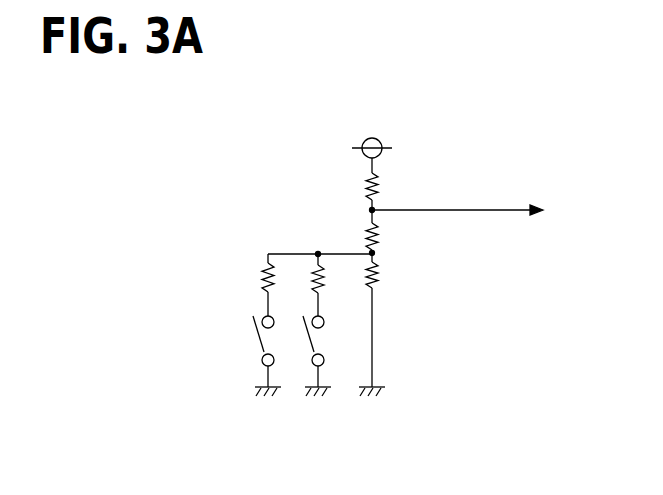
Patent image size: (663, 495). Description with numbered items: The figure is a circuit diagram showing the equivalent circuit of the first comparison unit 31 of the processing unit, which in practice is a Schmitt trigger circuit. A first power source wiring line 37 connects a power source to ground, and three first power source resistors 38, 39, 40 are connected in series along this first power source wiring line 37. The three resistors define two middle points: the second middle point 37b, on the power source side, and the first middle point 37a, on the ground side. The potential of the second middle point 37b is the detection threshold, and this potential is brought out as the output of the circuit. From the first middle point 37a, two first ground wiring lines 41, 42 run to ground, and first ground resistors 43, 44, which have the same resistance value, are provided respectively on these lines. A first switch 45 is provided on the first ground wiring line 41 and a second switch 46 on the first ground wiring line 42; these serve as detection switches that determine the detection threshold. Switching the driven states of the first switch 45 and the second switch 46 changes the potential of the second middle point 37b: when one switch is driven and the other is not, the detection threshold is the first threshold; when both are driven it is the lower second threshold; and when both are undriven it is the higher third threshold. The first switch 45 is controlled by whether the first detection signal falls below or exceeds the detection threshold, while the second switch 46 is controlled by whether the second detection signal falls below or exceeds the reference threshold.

The first comparison unit 31 is at (441, 124).
The first power source wiring line 37 is at (374, 358).
The first middle point 37a is at (376, 258).
The second middle point 37b is at (370, 209).
The first power source resistor 38 is at (377, 178).
The first power source resistor 39 is at (377, 224).
The first power source resistor 40 is at (377, 286).
The first ground wiring line 41 is at (268, 298).
The first ground wiring line 42 is at (320, 302).
The first ground resistor 43 is at (270, 270).
The first ground resistor 44 is at (312, 270).
The first switch 45 is at (258, 332).
The second switch 46 is at (310, 328).